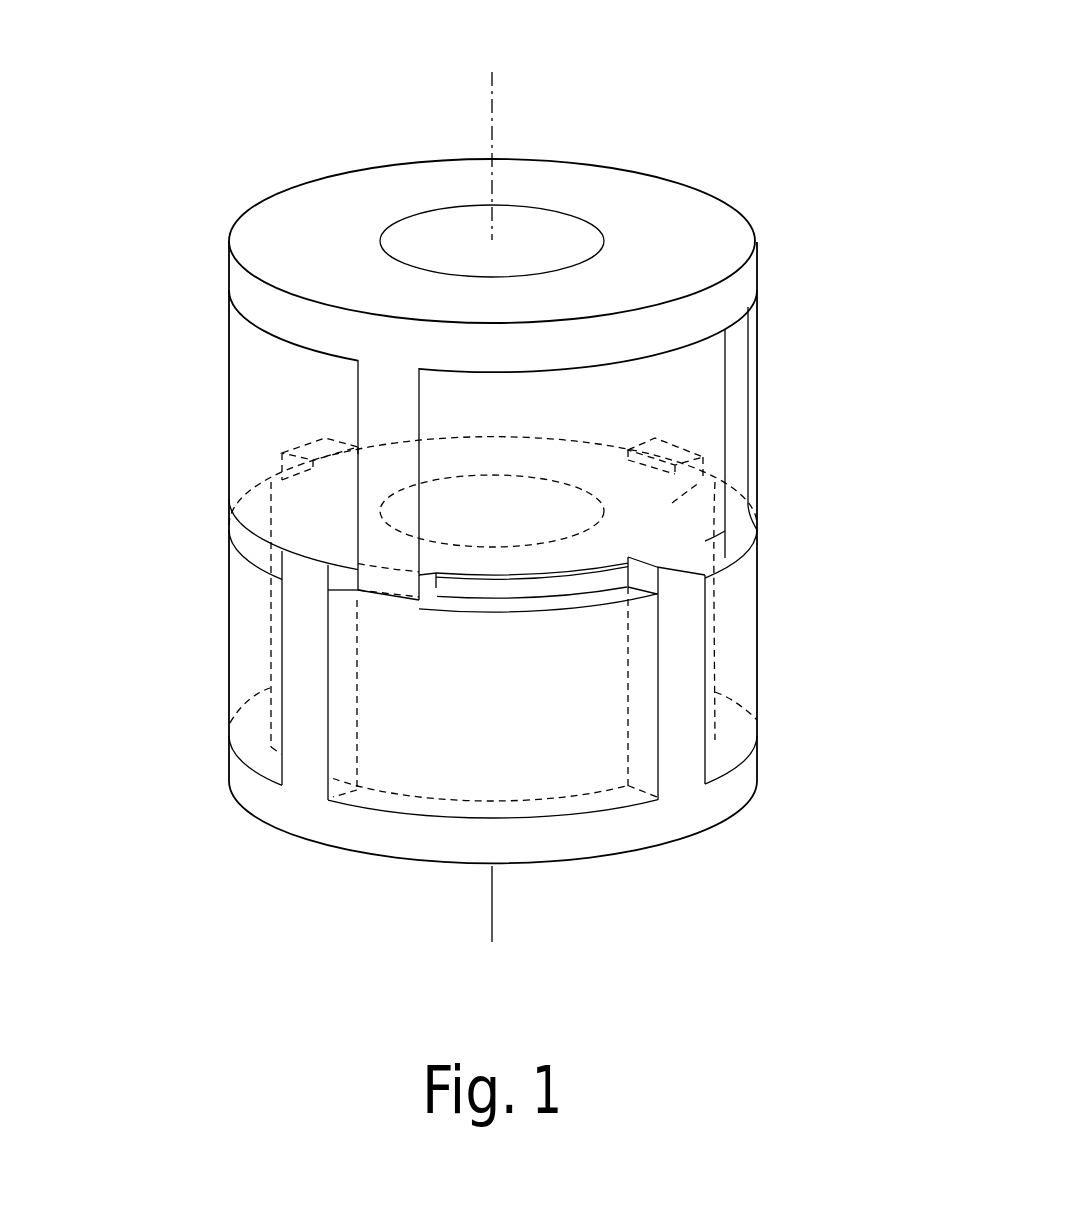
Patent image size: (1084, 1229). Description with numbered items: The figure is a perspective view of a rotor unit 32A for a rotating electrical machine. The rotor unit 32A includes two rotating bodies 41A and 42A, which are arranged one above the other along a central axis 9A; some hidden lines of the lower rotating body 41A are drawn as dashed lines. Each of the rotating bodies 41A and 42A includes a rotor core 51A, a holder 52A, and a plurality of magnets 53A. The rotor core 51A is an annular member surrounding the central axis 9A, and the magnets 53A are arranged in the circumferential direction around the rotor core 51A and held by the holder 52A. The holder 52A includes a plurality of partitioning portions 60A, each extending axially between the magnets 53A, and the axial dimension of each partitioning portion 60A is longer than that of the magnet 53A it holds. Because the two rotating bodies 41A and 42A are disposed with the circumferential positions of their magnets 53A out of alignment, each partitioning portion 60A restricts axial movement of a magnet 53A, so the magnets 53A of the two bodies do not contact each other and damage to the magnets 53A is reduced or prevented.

The rotor unit 32A is at (337, 115).
The central axis 9A is at (492, 95).
The holder 52A is at (762, 207).
The partitioning portion 60A is at (735, 353).
The magnet 53A is at (652, 395).
The rotor core 51A is at (735, 478).
The rotating body 42A is at (190, 382).
The rotating body 41A is at (190, 672).